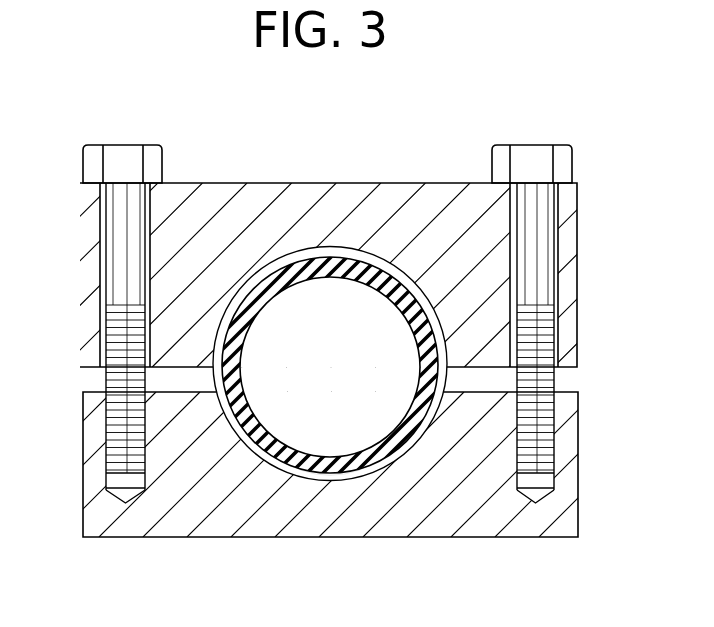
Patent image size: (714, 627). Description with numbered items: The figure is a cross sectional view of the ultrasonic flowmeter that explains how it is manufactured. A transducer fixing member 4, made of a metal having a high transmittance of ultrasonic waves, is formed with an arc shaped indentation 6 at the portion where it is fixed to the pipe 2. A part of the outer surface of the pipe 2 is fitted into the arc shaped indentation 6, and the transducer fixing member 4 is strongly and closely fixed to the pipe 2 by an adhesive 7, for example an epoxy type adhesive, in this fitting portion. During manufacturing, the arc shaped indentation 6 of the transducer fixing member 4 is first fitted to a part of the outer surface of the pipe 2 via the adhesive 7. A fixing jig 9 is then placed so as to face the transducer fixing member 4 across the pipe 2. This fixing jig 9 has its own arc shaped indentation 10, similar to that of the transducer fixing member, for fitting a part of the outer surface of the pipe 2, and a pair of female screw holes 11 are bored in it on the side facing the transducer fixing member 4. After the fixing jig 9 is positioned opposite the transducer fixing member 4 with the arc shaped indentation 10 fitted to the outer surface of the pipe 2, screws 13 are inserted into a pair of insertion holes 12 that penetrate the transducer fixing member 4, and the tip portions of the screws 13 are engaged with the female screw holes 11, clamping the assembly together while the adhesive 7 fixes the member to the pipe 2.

The pipe 2 is at (243, 390).
The transducer fixing member 4 is at (255, 193).
The arc shaped indentation 6 is at (336, 258).
The adhesive 7 is at (292, 252).
The fixing jig 9 is at (433, 537).
The arc shaped indentation 10 is at (347, 478).
The female screw holes 11 is at (143, 483).
The insertion holes 12 is at (112, 273).
The screws 13 is at (115, 155).